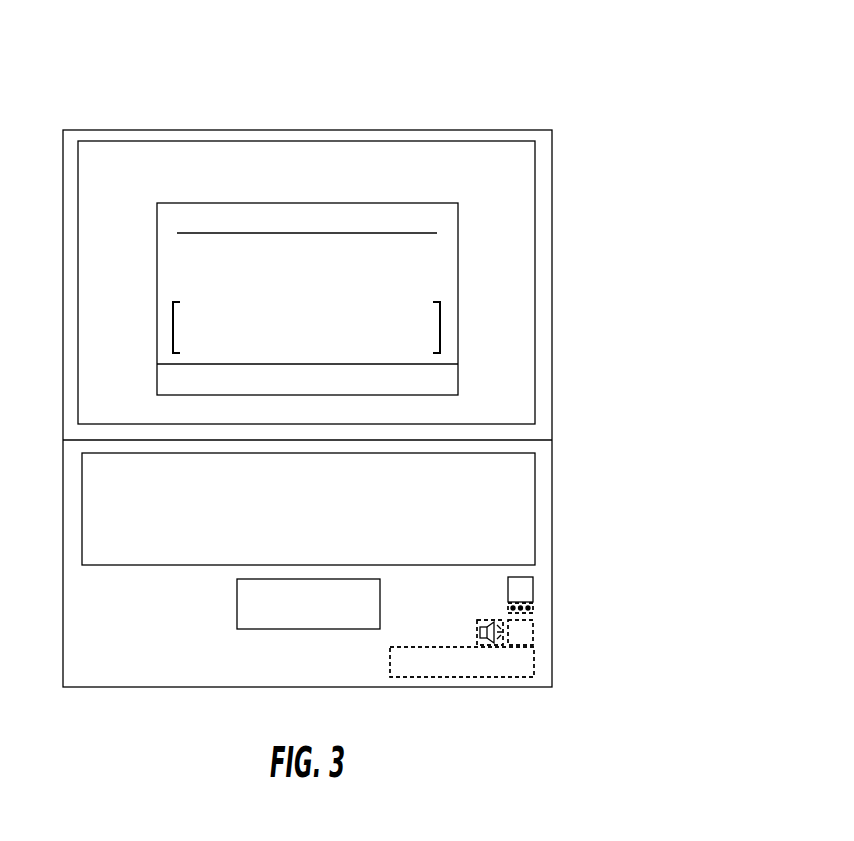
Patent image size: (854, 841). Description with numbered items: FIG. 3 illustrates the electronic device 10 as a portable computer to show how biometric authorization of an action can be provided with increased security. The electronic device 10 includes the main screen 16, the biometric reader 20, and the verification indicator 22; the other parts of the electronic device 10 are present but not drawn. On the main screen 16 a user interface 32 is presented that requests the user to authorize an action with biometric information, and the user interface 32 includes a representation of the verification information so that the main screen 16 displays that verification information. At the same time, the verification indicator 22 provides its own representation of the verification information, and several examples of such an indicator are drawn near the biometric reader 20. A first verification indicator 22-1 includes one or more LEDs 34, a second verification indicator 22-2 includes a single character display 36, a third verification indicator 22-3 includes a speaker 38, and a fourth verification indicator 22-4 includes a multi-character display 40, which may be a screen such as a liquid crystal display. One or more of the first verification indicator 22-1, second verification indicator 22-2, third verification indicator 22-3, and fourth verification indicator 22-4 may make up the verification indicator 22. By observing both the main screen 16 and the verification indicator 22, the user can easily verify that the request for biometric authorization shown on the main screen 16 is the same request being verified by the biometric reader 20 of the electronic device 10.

The electronic device 10 is at (575, 56).
The main screen 16 is at (535, 140).
The user interface 32 is at (455, 196).
The biometric reader 20 is at (533, 577).
The verification indicator 22 is at (580, 581).
The LEDs 34 is at (508, 605).
The first verification indicator 22-1 is at (534, 607).
The single character display 36 is at (528, 622).
The second verification indicator 22-2 is at (536, 635).
The speaker 38 is at (480, 620).
The third verification indicator 22-3 is at (478, 632).
The multi-character display 40 is at (489, 675).
The fourth verification indicator 22-4 is at (536, 660).